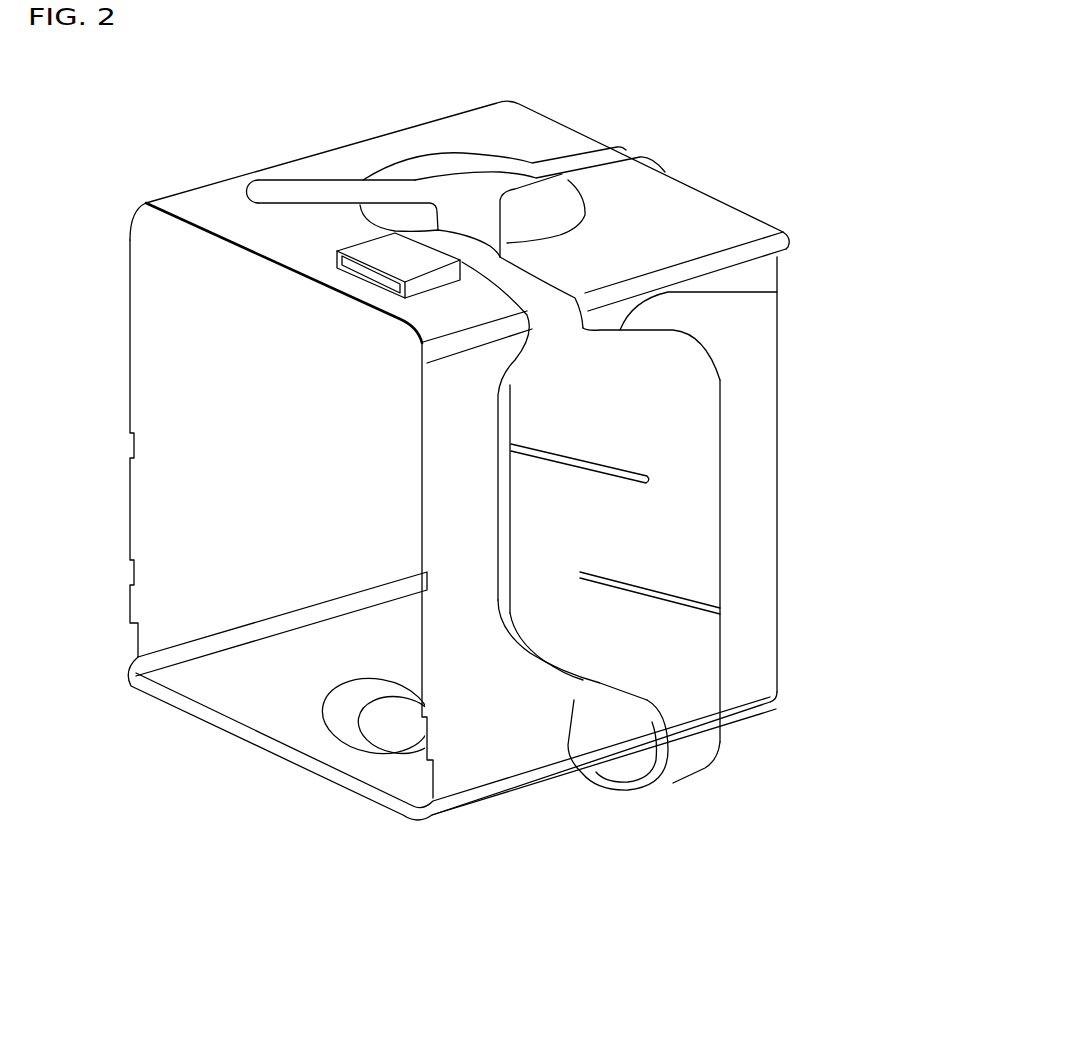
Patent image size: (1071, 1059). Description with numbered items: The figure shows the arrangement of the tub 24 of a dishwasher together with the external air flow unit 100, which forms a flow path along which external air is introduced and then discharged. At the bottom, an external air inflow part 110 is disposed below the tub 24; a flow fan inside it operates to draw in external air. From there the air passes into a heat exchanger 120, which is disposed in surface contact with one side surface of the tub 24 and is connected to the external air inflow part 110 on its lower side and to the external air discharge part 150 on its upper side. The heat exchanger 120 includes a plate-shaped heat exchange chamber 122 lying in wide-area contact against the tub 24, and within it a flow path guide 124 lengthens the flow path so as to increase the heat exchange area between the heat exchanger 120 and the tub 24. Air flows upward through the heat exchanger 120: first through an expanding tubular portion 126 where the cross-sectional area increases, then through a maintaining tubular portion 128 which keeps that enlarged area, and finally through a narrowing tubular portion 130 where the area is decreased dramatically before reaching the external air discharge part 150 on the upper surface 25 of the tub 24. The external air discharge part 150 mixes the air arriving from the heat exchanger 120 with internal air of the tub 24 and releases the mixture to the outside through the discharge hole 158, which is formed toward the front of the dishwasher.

The tub 24 is at (192, 278).
The upper surface 25 is at (710, 228).
The external air flow unit 100 is at (736, 560).
The external air inflow part 110 is at (707, 782).
The heat exchanger 120 is at (725, 483).
The heat exchange chamber 122 is at (721, 583).
The flow path guide 124 is at (593, 463).
The expanding tubular portion 126 is at (577, 660).
The maintaining tubular portion 128 is at (492, 574).
The narrowing tubular portion 130 is at (790, 292).
The external air discharge part 150 is at (526, 258).
The discharge hole 158 is at (368, 276).